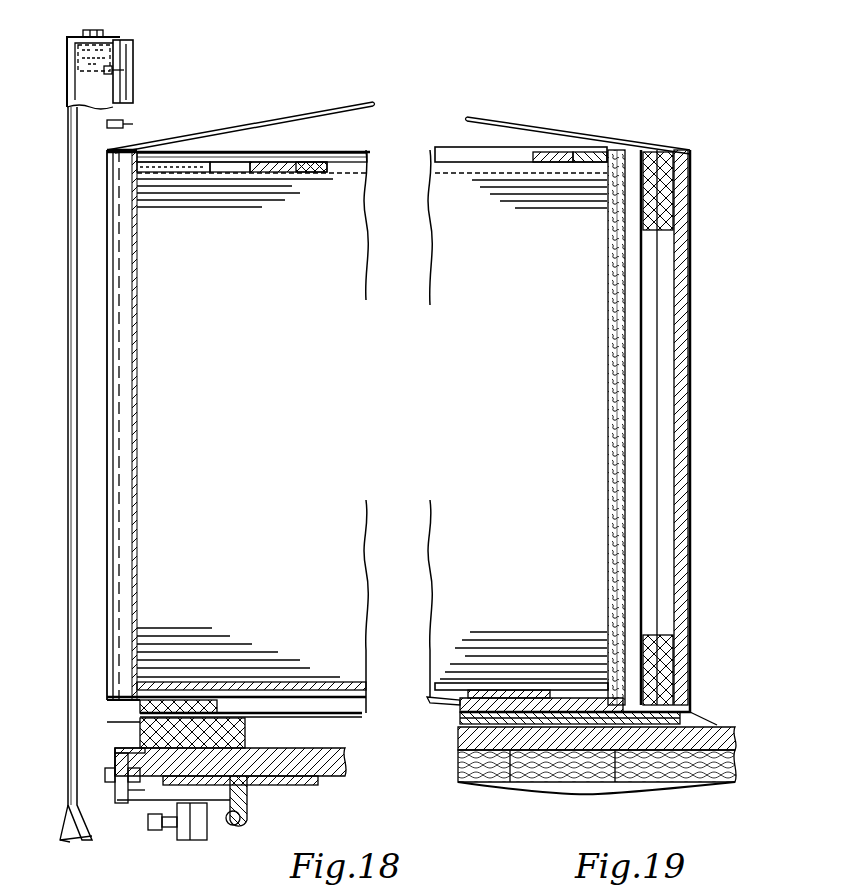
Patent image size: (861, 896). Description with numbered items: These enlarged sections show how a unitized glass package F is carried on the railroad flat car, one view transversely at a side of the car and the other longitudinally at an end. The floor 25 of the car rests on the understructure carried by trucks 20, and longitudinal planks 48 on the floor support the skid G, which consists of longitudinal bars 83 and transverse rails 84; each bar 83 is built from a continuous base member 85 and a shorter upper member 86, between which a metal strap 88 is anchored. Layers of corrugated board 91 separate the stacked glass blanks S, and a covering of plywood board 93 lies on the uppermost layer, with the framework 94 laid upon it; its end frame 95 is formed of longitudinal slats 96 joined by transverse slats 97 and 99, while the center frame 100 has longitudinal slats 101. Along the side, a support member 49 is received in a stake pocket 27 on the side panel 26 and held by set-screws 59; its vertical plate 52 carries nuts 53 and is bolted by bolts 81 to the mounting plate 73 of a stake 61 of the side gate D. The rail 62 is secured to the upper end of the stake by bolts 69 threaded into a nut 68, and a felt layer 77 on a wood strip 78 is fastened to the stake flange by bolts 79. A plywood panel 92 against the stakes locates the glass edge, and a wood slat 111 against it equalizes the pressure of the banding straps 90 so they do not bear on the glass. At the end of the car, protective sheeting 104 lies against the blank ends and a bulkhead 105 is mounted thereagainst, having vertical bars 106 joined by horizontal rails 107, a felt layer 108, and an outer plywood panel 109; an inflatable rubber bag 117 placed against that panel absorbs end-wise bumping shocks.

In FIG. 18, the bolts 69 is at (82, 32).
In FIG. 18, the nut 68 is at (78, 58).
In FIG. 18, the rail 62 is at (70, 70).
In FIG. 18, the bolts 79 is at (104, 72).
In FIG. 18, the felt layer 77 is at (133, 60).
In FIG. 18, the wood strip 78 is at (124, 80).
In FIG. 18, the center frame 100 is at (170, 166).
In FIG. 18, the banding straps 90 is at (246, 114).
In FIG. 18, the framework 94 is at (288, 146).
In FIG. 18, the end frame 95 is at (305, 162).
In FIG. 19, the end frame 95 is at (553, 152).
In FIG. 18, the transverse slats 99 is at (347, 153).
In FIG. 18, the protective board material 93 is at (369, 172).
In FIG. 19, the protective board material 93 is at (453, 172).
In FIG. 18, the longitudinal slats 96 is at (308, 172).
In FIG. 19, the longitudinal slats 96 is at (500, 165).
In FIG. 18, the longitudinal slats 101 is at (192, 165).
In FIG. 18, the corrugated board 91 is at (243, 206).
In FIG. 19, the corrugated board 91 is at (552, 210).
In FIG. 18, the glass blanks S is at (265, 204).
In FIG. 19, the glass blanks S is at (535, 204).
In FIG. 18, the side gate D is at (86, 193).
In FIG. 18, the stakes 61 is at (85, 232).
In FIG. 18, the wood slat 111 is at (125, 312).
In FIG. 18, the plywood panel 92 is at (135, 350).
In FIG. 18, the glass package F is at (182, 625).
In FIG. 18, the skid G is at (125, 722).
In FIG. 19, the skid G is at (537, 690).
In FIG. 18, the upper member 86 is at (245, 714).
In FIG. 19, the upper member 86 is at (455, 706).
In FIG. 18, the base member 85 is at (242, 728).
In FIG. 19, the base member 85 is at (465, 728).
In FIG. 18, the mounting plate 73 is at (115, 757).
In FIG. 18, the bolts 81 is at (105, 775).
In FIG. 18, the vertical plate 52 is at (128, 782).
In FIG. 18, the nuts 53 is at (128, 792).
In FIG. 18, the support member 49 is at (72, 838).
In FIG. 18, the set-screws or bolts 59 is at (156, 830).
In FIG. 18, the stake pocket 27 is at (200, 815).
In FIG. 18, the planks 48 is at (182, 725).
In FIG. 19, the planks 48 is at (692, 733).
In FIG. 18, the side panel 26 is at (250, 815).
In FIG. 18, the floor 25 is at (312, 766).
In FIG. 19, the floor 25 is at (720, 766).
In FIG. 19, the metal strap 88 is at (505, 143).
In FIG. 19, the transverse slats 97 is at (580, 155).
In FIG. 19, the inflatable rubber bag 117 is at (722, 108).
In FIG. 19, the rails 107 is at (662, 220).
In FIG. 19, the trucks 20 is at (556, 345).
In FIG. 19, the protective sheeting 104 is at (612, 412).
In FIG. 19, the bulkhead 105 is at (645, 447).
In FIG. 19, the bars 106 is at (655, 480).
In FIG. 19, the felt layer 108 is at (622, 508).
In FIG. 19, the plywood panel 109 is at (681, 548).
In FIG. 19, the transverse rails 84 is at (495, 694).
In FIG. 19, the bars 83 is at (577, 700).